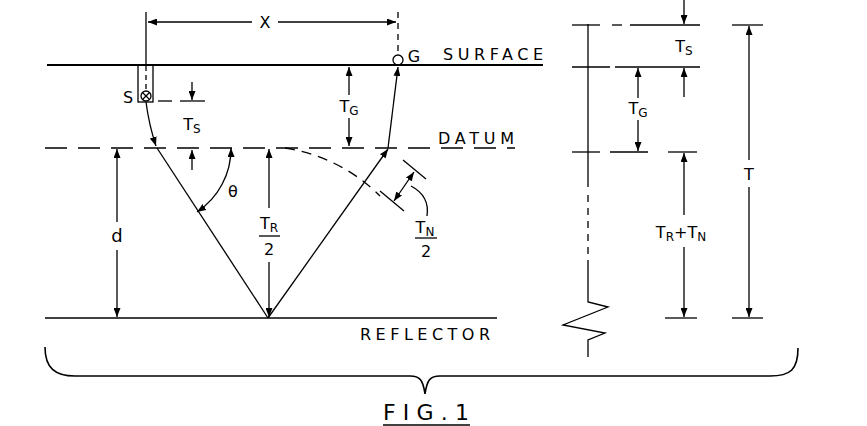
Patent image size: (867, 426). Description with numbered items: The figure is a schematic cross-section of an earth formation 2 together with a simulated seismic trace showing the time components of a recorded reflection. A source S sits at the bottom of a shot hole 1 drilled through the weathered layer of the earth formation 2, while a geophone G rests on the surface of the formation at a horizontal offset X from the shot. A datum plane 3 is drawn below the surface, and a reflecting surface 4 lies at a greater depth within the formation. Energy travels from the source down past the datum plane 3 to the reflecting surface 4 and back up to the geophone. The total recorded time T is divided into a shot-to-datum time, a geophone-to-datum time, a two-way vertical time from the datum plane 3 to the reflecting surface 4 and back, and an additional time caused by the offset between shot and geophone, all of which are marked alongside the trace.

The shot hole 1 is at (137, 80).
The earth formation 2 is at (278, 109).
The datum plane 3 is at (465, 150).
The reflecting surface 4 is at (422, 317).